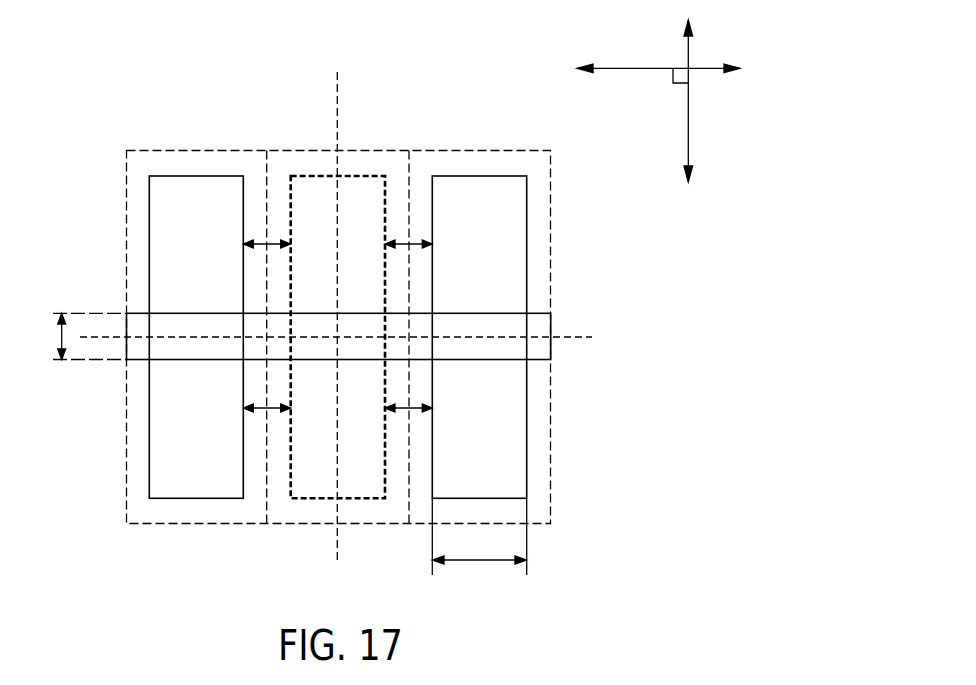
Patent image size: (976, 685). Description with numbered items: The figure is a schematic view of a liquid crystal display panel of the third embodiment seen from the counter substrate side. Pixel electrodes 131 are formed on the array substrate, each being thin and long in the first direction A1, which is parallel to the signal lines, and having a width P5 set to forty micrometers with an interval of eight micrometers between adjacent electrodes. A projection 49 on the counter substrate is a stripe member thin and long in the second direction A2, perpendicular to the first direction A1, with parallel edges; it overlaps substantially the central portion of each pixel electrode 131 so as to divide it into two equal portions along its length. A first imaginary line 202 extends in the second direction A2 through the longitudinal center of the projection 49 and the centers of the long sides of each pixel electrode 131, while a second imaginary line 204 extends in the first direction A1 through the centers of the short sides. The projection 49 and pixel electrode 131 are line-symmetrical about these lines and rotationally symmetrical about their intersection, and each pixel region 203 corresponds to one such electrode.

The second imaginary line 204 is at (338, 97).
The first imaginary line 202 is at (591, 340).
The pixel region 203 is at (368, 168).
The pixel electrode 131 is at (482, 176).
The projection 49 is at (538, 323).
The width of each pixel electrode P5 is at (477, 560).
The first direction A1 is at (688, 133).
The second direction A2 is at (630, 68).